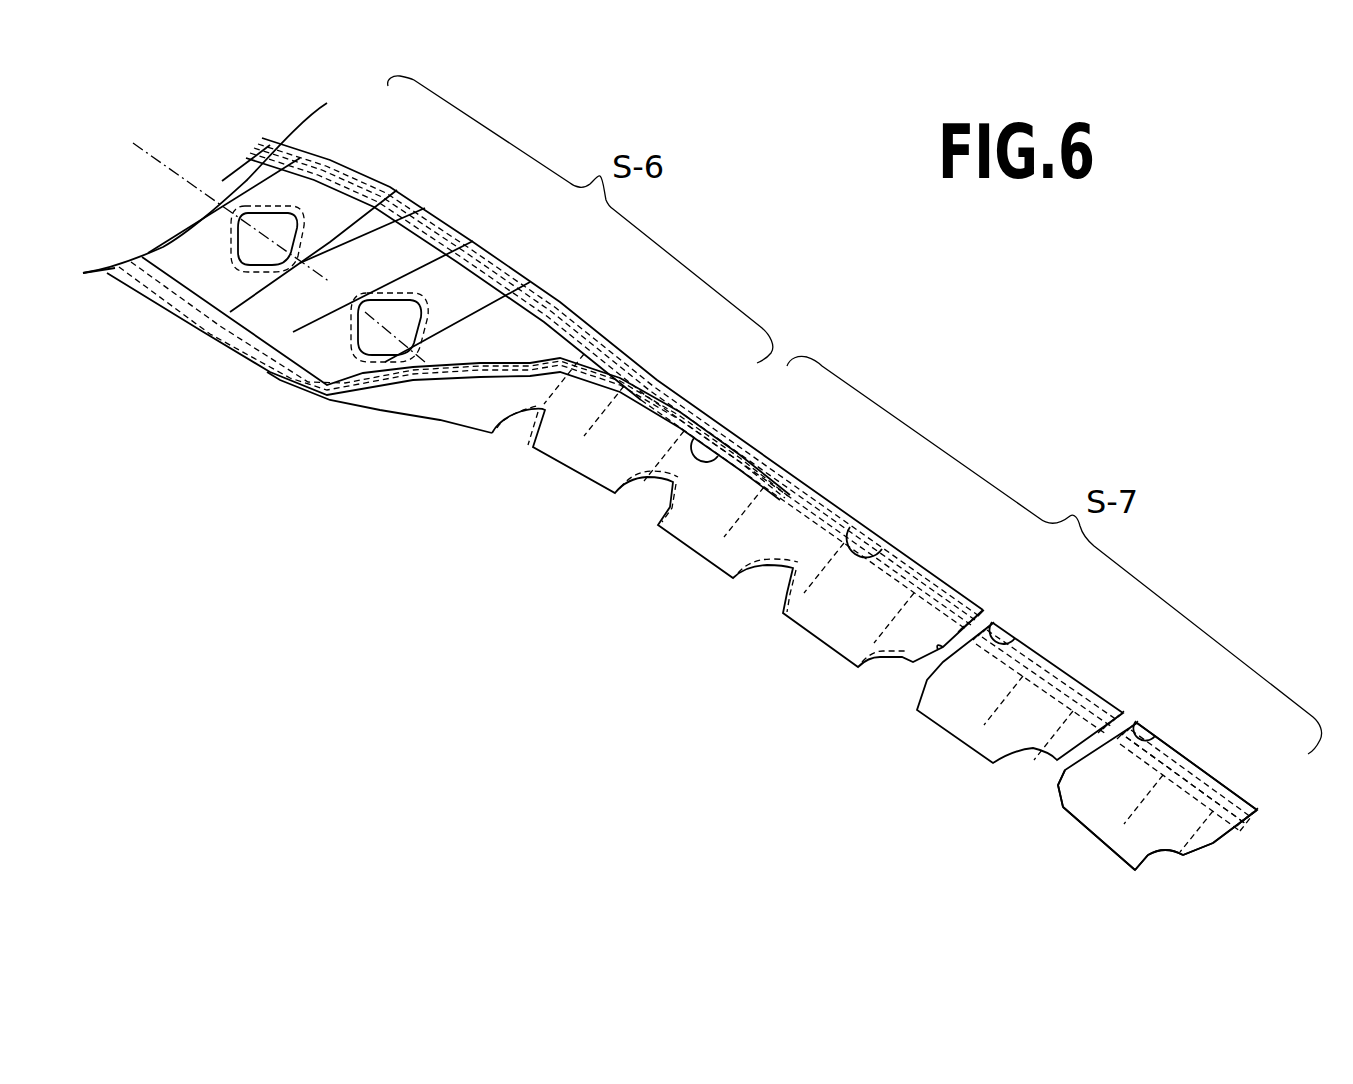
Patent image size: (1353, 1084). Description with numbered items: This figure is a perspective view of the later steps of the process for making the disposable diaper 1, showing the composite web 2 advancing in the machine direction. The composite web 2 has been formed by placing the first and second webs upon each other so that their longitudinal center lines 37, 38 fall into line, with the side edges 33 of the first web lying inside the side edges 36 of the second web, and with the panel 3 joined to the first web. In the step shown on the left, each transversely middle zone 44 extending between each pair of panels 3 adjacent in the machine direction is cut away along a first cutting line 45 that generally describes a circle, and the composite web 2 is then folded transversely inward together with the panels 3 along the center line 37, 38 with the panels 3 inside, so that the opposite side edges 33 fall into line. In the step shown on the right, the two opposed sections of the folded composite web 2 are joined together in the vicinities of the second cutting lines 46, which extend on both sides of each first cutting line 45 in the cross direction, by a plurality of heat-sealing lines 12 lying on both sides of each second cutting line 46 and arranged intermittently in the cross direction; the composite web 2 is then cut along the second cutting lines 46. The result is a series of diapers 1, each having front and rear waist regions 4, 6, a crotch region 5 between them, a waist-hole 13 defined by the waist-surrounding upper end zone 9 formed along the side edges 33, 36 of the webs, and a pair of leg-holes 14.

The disposable diaper 1 is at (1257, 812).
The composite web 2 is at (397, 190).
The panel 3 is at (425, 208).
The front waist region 4 is at (1167, 797).
The crotch region 5 is at (1097, 837).
The rear waist region 6 is at (1107, 857).
The waist-surrounding upper end zone 9 is at (1243, 794).
The heat-sealing lines 12 is at (880, 547).
The waist-hole 13 is at (1230, 787).
The leg-holes 14 is at (1050, 793).
The side edges of the first web 33 is at (522, 318).
The side edges of the second web 36 is at (1167, 760).
The longitudinal center line of the first web 37 is at (161, 160).
The longitudinal center line of the second web 38 is at (185, 186).
The transversely middle zone 44 is at (333, 158).
The first cutting line 45 is at (252, 213).
The second cutting lines 46 is at (712, 447).